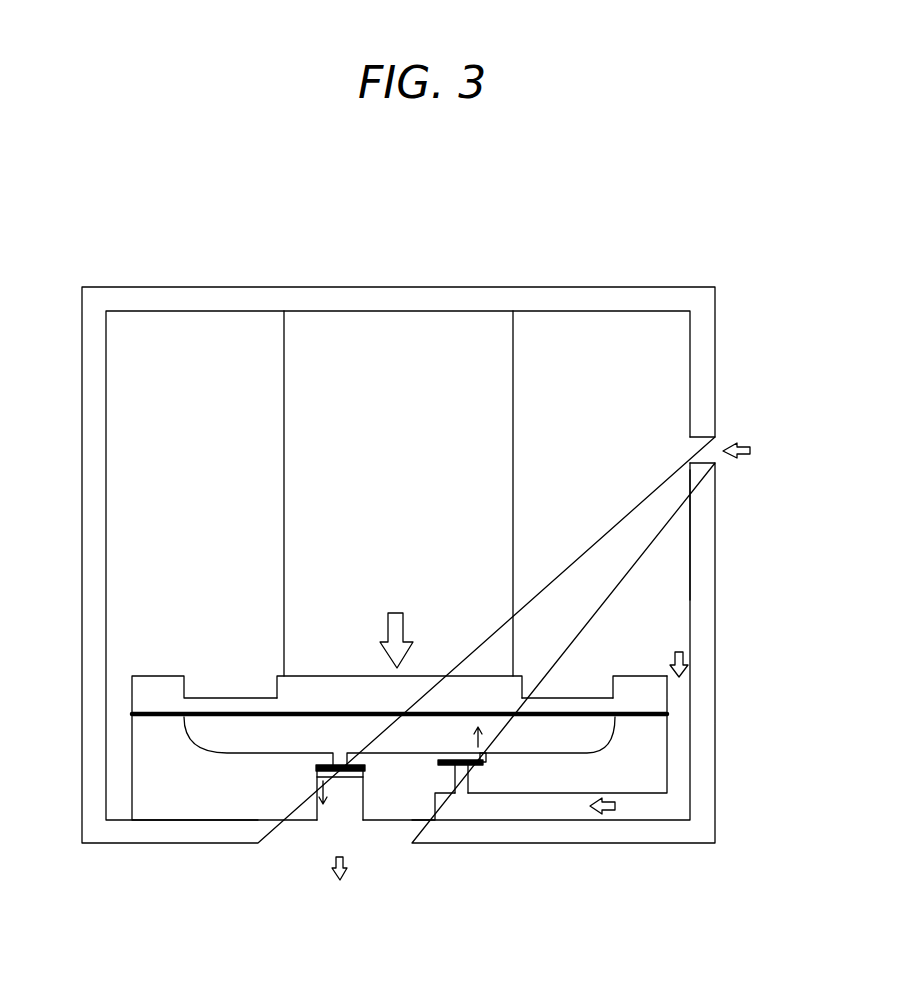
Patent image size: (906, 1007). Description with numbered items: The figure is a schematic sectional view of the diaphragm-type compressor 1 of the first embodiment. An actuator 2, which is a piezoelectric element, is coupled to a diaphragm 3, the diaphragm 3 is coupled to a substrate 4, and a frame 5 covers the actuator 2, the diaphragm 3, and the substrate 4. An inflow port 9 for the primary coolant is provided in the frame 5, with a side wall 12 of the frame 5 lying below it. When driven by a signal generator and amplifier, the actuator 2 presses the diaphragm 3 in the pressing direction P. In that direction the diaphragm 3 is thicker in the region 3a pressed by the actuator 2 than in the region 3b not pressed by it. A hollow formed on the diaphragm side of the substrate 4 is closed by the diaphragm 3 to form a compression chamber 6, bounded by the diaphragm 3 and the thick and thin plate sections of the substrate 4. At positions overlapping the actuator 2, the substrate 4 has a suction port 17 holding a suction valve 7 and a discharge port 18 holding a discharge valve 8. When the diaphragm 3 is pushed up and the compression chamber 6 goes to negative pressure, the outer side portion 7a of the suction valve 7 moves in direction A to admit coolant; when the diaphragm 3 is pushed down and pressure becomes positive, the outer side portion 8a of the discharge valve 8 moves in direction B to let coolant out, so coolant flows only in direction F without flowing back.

The diaphragm-type compressor 1 is at (697, 227).
The actuator 2 is at (378, 365).
The diaphragm 3 is at (148, 693).
The region pressed by the actuator 3a is at (477, 688).
The region not pressed by the actuator 3b is at (590, 698).
The substrate 4 is at (160, 778).
The frame 5 is at (183, 298).
The compression chamber 6 is at (510, 742).
The suction valve 7 is at (468, 768).
The outer side portion of the suction valve 7a is at (487, 762).
The discharge valve 8 is at (317, 787).
The outer side portion of the discharge valve 8a is at (320, 773).
The inflow port 9 is at (703, 447).
The side wall 12 is at (657, 552).
The suction port 17 is at (460, 785).
The discharge port 18 is at (351, 772).